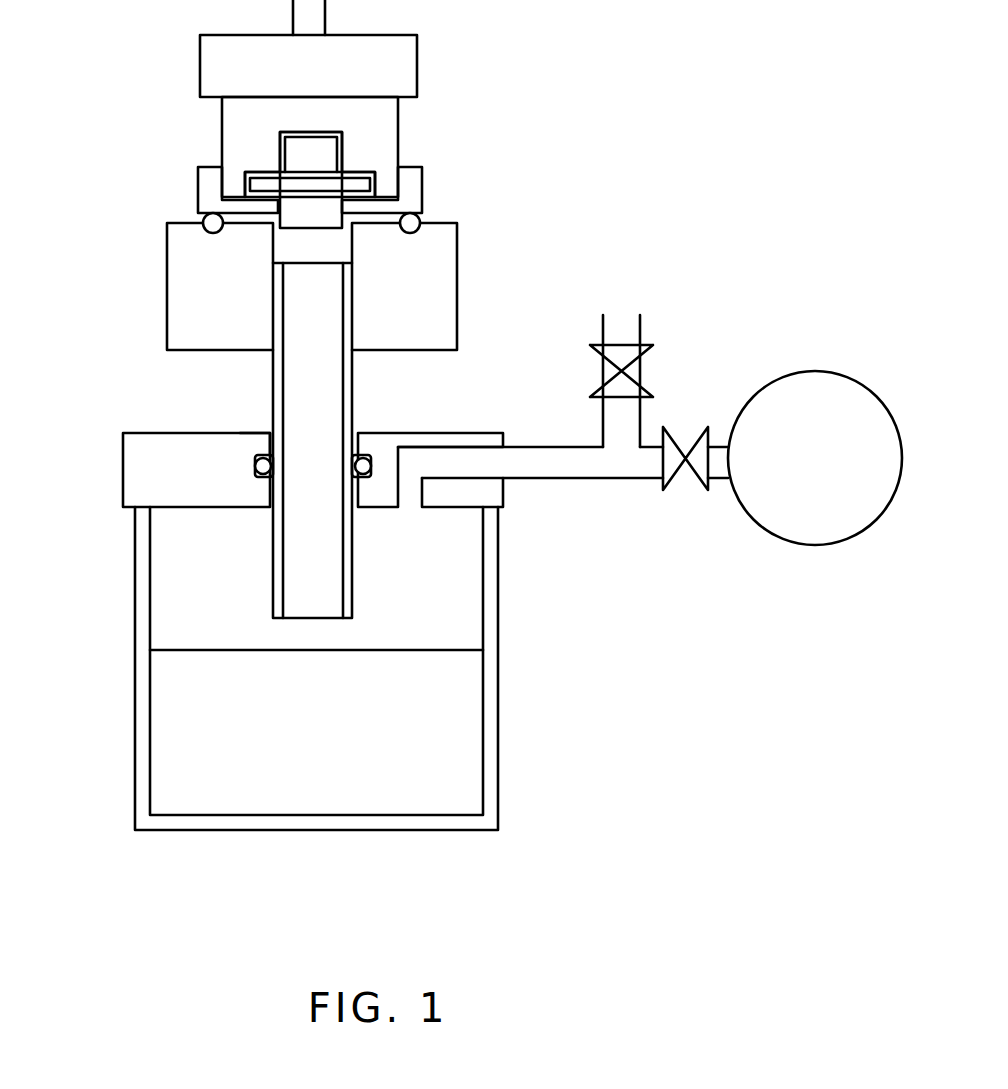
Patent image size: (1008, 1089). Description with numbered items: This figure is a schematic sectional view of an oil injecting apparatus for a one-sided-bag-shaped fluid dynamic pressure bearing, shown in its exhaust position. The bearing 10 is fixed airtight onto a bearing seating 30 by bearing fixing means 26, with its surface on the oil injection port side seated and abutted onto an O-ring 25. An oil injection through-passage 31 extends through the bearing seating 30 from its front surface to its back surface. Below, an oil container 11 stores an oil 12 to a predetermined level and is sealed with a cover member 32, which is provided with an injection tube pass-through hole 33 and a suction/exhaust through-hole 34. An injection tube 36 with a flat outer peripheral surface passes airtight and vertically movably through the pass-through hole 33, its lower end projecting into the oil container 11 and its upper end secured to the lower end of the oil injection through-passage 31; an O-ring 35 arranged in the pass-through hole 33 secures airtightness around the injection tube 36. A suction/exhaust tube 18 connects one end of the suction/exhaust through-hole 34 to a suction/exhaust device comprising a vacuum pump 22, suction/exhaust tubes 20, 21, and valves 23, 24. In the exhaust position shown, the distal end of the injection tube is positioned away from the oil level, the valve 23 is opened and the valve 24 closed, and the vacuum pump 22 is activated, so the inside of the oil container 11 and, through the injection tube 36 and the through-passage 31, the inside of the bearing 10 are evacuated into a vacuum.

The one-sided-bag-shaped fluid dynamic pressure bearing 10 is at (383, 153).
The oil container 11 is at (143, 610).
The oil 12 is at (170, 760).
The suction/exhaust tube 18 is at (568, 462).
The suction/exhaust tube 20 is at (720, 463).
The suction/exhaust tube 21 is at (632, 332).
The vacuum pump 22 is at (812, 525).
The valve 23 is at (687, 477).
The valve 24 is at (632, 372).
The O-ring 25 is at (420, 221).
The bearing fixing means 26 is at (402, 74).
The bearing seating 30 is at (437, 297).
The oil injection through-passage 31 is at (263, 248).
The cover member 32 is at (147, 458).
The injection tube pass-through hole 33 is at (270, 440).
The suction/exhaust through-hole 34 is at (447, 457).
The O-ring 35 is at (257, 464).
The injection tube 36 is at (280, 550).